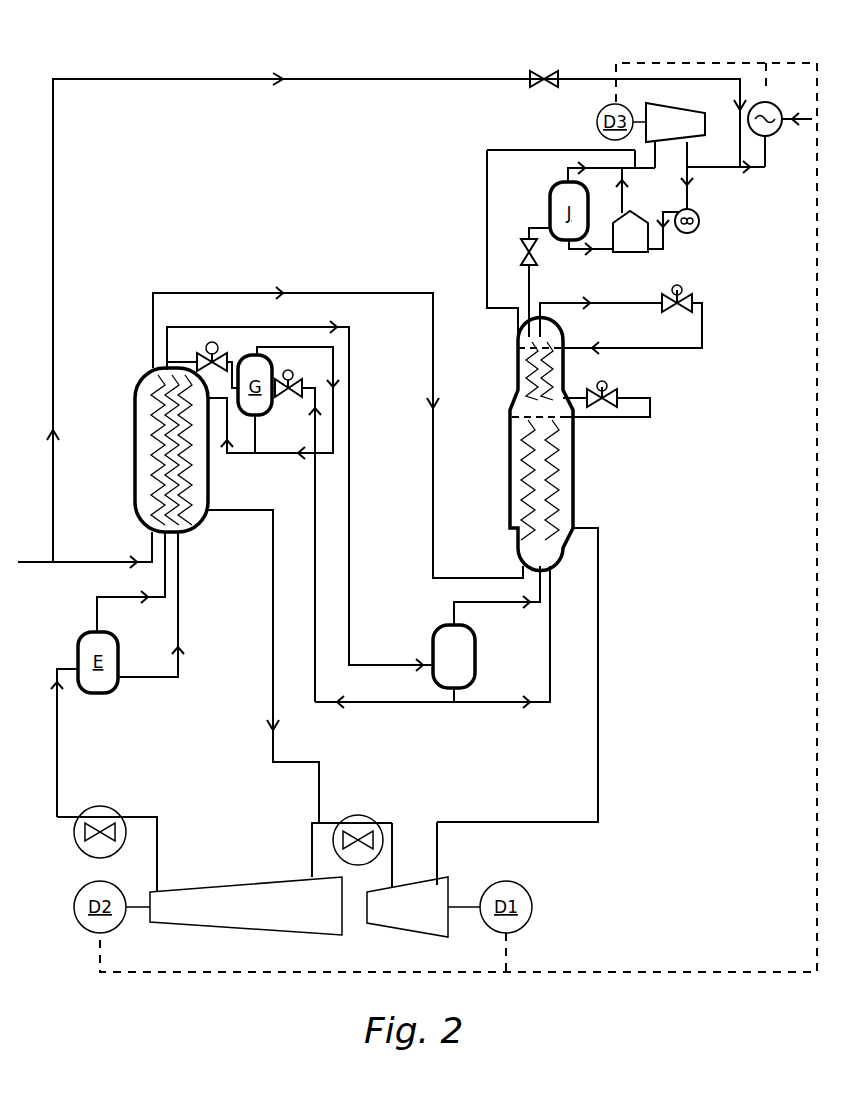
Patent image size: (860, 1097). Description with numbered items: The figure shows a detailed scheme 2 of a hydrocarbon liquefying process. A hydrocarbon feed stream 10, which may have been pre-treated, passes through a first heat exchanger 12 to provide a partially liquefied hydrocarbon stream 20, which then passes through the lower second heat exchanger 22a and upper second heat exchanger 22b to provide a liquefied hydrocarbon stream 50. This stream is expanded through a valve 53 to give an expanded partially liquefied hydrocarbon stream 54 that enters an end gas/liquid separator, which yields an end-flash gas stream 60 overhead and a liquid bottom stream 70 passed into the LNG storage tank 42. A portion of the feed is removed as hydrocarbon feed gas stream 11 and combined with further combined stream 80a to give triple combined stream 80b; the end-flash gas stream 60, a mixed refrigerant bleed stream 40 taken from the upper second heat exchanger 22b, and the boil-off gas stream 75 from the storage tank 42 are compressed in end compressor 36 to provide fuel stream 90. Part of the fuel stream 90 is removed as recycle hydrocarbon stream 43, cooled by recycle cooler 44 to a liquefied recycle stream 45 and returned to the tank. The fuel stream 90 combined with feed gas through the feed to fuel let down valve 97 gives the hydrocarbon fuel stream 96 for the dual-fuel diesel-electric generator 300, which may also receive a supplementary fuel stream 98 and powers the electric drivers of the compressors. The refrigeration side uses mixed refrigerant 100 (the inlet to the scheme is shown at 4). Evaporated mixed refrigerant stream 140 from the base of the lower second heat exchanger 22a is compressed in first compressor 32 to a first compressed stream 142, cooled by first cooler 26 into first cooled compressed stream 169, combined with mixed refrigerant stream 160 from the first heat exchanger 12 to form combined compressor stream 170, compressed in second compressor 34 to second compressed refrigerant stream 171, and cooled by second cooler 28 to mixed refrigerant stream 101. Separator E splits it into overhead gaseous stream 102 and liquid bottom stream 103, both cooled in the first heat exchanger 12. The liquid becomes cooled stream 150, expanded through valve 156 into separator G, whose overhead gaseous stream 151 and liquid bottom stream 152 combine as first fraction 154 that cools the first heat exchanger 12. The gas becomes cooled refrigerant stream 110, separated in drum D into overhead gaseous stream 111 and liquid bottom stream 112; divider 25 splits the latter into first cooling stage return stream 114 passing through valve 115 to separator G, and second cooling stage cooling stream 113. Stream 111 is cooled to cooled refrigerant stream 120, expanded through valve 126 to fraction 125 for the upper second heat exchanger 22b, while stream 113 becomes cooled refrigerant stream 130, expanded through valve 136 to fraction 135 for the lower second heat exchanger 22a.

The scheme 2 is at (124, 412).
The inlet stream 4 is at (50, 738).
The hydrocarbon feed stream 10 is at (38, 560).
The hydrocarbon feed gas stream 11 is at (394, 76).
The first heat exchanger 12 is at (134, 452).
The partially liquefied hydrocarbon stream 20 is at (255, 292).
The lower second heat exchanger 22a is at (573, 518).
The upper second heat exchanger 22b is at (516, 368).
The divider 25 is at (441, 696).
The first cooler 26 is at (358, 866).
The second cooler 28 is at (78, 844).
The first compressor 32 is at (407, 907).
The second compressor 34 is at (246, 906).
The end compressor 36 is at (669, 122).
The mixed refrigerant bleed stream 40 is at (486, 214).
The storage tank 42 is at (630, 231).
The recycle hydrocarbon stream 43 is at (700, 212).
The recycle cooler 44 is at (699, 229).
The liquefied recycle stream 45 is at (666, 250).
The liquefied hydrocarbon stream 50 is at (528, 289).
The valve 53 is at (534, 246).
The expanded partially liquefied hydrocarbon stream 54 is at (538, 226).
The end-flash gas stream 60 is at (566, 170).
The liquid bottom stream 70 is at (598, 253).
The boil-off gas stream 75 is at (618, 198).
The further combined stream 80a is at (633, 167).
The triple combined stream 80b is at (661, 153).
The fuel stream 90 is at (690, 152).
The hydrocarbon fuel stream 96 is at (768, 168).
The feed to fuel let down valve 97 is at (551, 70).
The supplementary fuel stream 98 is at (803, 126).
The mixed refrigerant 100 is at (605, 713).
The mixed refrigerant stream 101 is at (58, 731).
The overhead gaseous stream 102 is at (96, 617).
The liquid bottom stream 103 is at (131, 681).
The cooled refrigerant stream 110 is at (352, 604).
The overhead gaseous stream 111 is at (500, 604).
The liquid bottom stream 112 is at (472, 697).
The second cooling stage cooling stream 113 is at (508, 704).
The first cooling stage return stream 114 is at (400, 704).
The valve 115 is at (296, 377).
The cooled refrigerant stream 120 is at (633, 306).
The fraction 125 is at (681, 351).
The valve 126 is at (692, 301).
The cooled refrigerant stream 130 is at (574, 401).
The fraction 135 is at (632, 419).
The valve 136 is at (614, 394).
The evaporated mixed refrigerant stream 140 is at (600, 668).
The first compressed stream 142 is at (393, 852).
The cooled stream 150 is at (190, 360).
The overhead gaseous stream 151 is at (248, 352).
The liquid bottom stream 152 is at (258, 432).
The first fraction 154 is at (242, 455).
The valve 156 is at (200, 353).
The mixed refrigerant stream 160 is at (272, 657).
The first cooled compressed stream 169 is at (327, 823).
The combined compressor stream 170 is at (312, 854).
The second compressed refrigerant stream 171 is at (160, 838).
The dual-fuel diesel-electric generator 300 is at (773, 105).